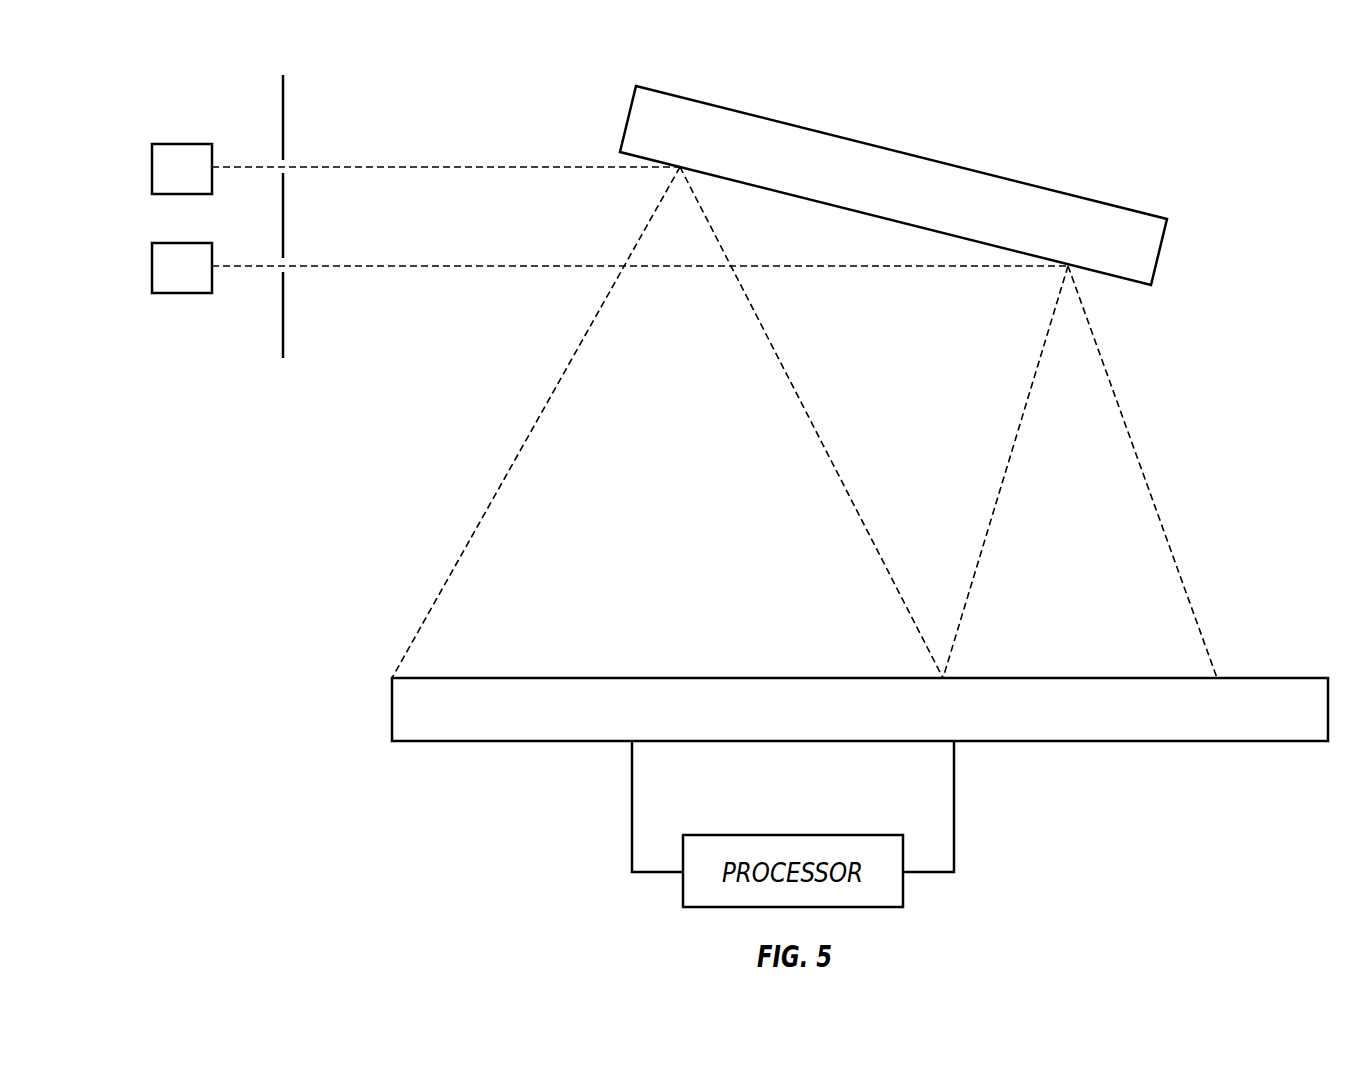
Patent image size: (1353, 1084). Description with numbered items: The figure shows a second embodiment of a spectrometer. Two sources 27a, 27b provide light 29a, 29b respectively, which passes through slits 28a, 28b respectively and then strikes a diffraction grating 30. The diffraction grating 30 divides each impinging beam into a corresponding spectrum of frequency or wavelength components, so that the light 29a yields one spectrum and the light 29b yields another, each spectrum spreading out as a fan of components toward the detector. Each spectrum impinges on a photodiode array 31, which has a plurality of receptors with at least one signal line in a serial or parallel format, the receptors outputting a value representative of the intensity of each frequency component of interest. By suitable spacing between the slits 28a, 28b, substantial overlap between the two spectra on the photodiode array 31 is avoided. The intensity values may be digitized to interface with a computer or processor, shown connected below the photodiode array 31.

The light source 27a is at (166, 150).
The light source 27b is at (166, 250).
The slit 28a is at (297, 158).
The slit 28b is at (297, 280).
The light 29a is at (446, 142).
The light 29b is at (640, 241).
The diffraction grating 30 is at (893, 185).
The photodiode array 31 is at (1293, 723).